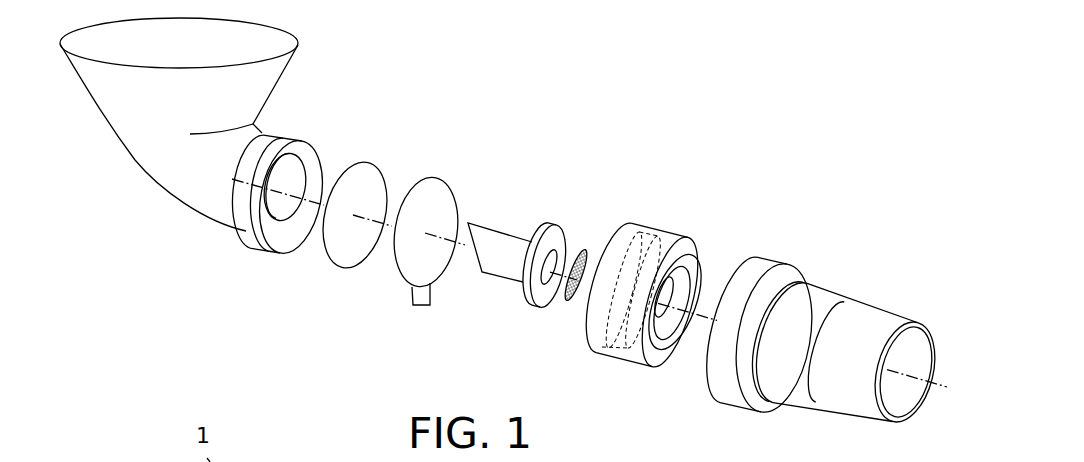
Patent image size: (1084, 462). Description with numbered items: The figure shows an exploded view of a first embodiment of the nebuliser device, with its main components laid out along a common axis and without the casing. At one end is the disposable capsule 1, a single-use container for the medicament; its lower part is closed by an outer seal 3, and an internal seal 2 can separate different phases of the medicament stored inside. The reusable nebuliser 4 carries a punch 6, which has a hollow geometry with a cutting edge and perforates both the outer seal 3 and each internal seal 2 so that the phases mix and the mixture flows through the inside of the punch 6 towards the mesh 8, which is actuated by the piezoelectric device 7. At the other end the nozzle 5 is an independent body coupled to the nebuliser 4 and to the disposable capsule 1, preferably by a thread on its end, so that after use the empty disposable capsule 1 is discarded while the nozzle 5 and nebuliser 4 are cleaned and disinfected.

The disposable capsule 1 is at (327, 85).
The internal seal 2 is at (368, 168).
The outer seal 3 is at (438, 192).
The nebuliser 4 is at (587, 286).
The nozzle 5 is at (830, 260).
The punch 6 is at (505, 282).
The piezoelectric device 7 is at (635, 365).
The mesh 8 is at (568, 303).